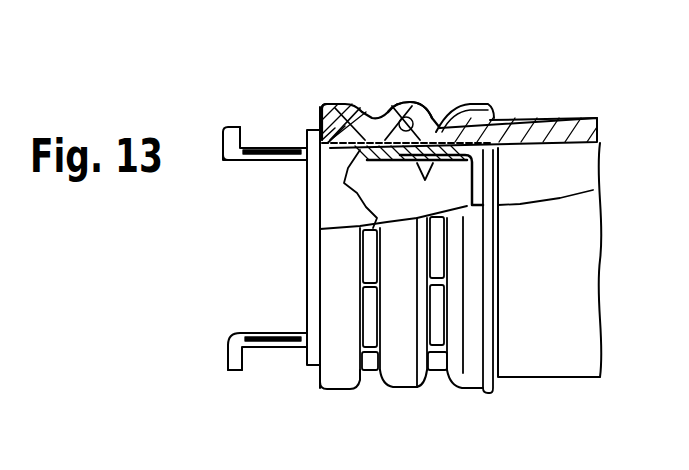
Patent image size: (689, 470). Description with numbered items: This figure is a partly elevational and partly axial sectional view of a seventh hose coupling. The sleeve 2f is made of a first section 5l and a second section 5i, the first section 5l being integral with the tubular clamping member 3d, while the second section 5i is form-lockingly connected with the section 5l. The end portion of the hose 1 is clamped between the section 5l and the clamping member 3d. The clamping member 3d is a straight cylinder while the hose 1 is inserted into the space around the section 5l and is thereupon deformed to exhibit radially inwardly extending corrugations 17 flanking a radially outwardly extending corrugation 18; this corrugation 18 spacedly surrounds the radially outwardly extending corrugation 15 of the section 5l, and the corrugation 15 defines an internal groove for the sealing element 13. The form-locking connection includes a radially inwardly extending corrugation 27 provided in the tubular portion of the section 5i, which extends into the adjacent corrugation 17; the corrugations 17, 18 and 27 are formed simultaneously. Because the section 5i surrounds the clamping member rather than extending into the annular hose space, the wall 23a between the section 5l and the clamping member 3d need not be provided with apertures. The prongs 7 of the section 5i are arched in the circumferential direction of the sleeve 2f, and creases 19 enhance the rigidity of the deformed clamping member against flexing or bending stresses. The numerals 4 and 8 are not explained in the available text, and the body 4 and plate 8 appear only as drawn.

The hose 1 is at (562, 118).
The sleeve 2f is at (323, 104).
The tubular clamping member 3d is at (475, 105).
The body 4 is at (467, 178).
The second section 5i is at (330, 138).
The first section 5l is at (338, 107).
The prongs 7 is at (239, 163).
The spring plate 8 is at (268, 150).
The sealing element 13 is at (505, 118).
The radially outwardly extending corrugation 15 is at (405, 110).
The radially inwardly extending corrugations 17 is at (431, 128).
The radially outwardly extending corrugation 18 is at (410, 105).
The creases 19 is at (373, 355).
The wall 23a is at (306, 141).
The radially inwardly extending corrugation 27 is at (367, 110).